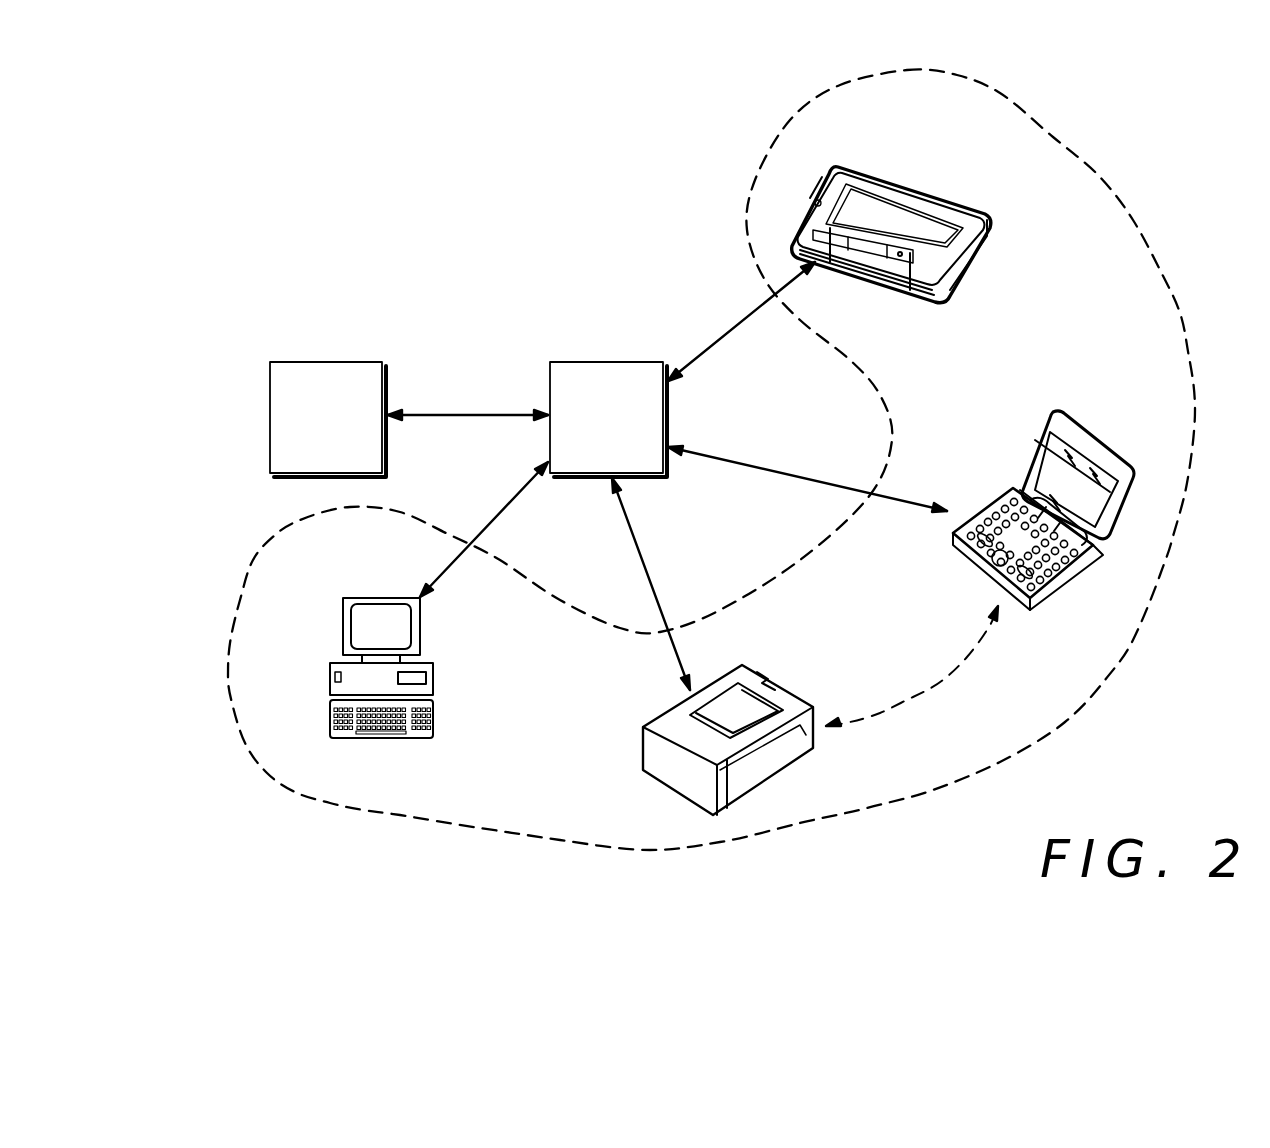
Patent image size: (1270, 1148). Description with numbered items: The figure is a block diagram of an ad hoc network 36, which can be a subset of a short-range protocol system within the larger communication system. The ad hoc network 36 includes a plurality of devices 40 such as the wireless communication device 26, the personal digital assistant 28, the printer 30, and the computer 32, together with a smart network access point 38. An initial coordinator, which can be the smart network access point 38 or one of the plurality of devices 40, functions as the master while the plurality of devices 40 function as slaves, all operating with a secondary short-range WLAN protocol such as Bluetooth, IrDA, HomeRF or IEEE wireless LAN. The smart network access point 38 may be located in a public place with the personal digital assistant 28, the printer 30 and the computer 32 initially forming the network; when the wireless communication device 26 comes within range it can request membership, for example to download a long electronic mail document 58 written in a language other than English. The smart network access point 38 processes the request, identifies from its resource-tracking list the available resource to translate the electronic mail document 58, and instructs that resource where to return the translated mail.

The wireless communication device 26 is at (889, 182).
The personal digital assistant 28 is at (1032, 465).
The printer 30 is at (767, 686).
The computer 32 is at (380, 598).
The ad hoc network 36 is at (285, 823).
The smart network access point 38 is at (551, 361).
The plurality of devices 40 is at (768, 164).
The electronic mail document 58 is at (271, 361).